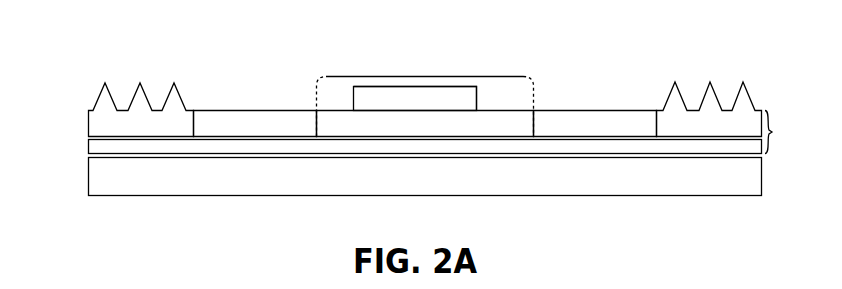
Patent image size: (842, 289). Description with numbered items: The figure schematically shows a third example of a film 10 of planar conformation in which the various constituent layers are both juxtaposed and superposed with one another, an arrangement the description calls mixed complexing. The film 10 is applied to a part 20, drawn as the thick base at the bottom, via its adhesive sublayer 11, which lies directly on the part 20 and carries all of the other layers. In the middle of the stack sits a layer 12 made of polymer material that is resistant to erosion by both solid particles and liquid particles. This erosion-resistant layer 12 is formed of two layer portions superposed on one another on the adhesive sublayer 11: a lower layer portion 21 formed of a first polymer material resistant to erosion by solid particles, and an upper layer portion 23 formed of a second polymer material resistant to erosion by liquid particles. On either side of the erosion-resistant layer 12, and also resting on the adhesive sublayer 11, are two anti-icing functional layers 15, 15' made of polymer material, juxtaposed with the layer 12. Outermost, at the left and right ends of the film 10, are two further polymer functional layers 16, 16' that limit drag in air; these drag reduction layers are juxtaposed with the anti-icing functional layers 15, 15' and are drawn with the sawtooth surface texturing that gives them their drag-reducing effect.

The film 10 is at (785, 132).
The adhesive sublayer 11 is at (93, 148).
The erosion-resistant layer 12 is at (445, 76).
The anti-icing functional layer 15 is at (255, 88).
The anti-icing functional layer 15' is at (600, 80).
The drag reduction layer 16 is at (111, 101).
The drag reduction layer 16' is at (727, 80).
The part 20 is at (665, 187).
The lower layer portion 21 is at (342, 120).
The upper layer portion 23 is at (457, 98).